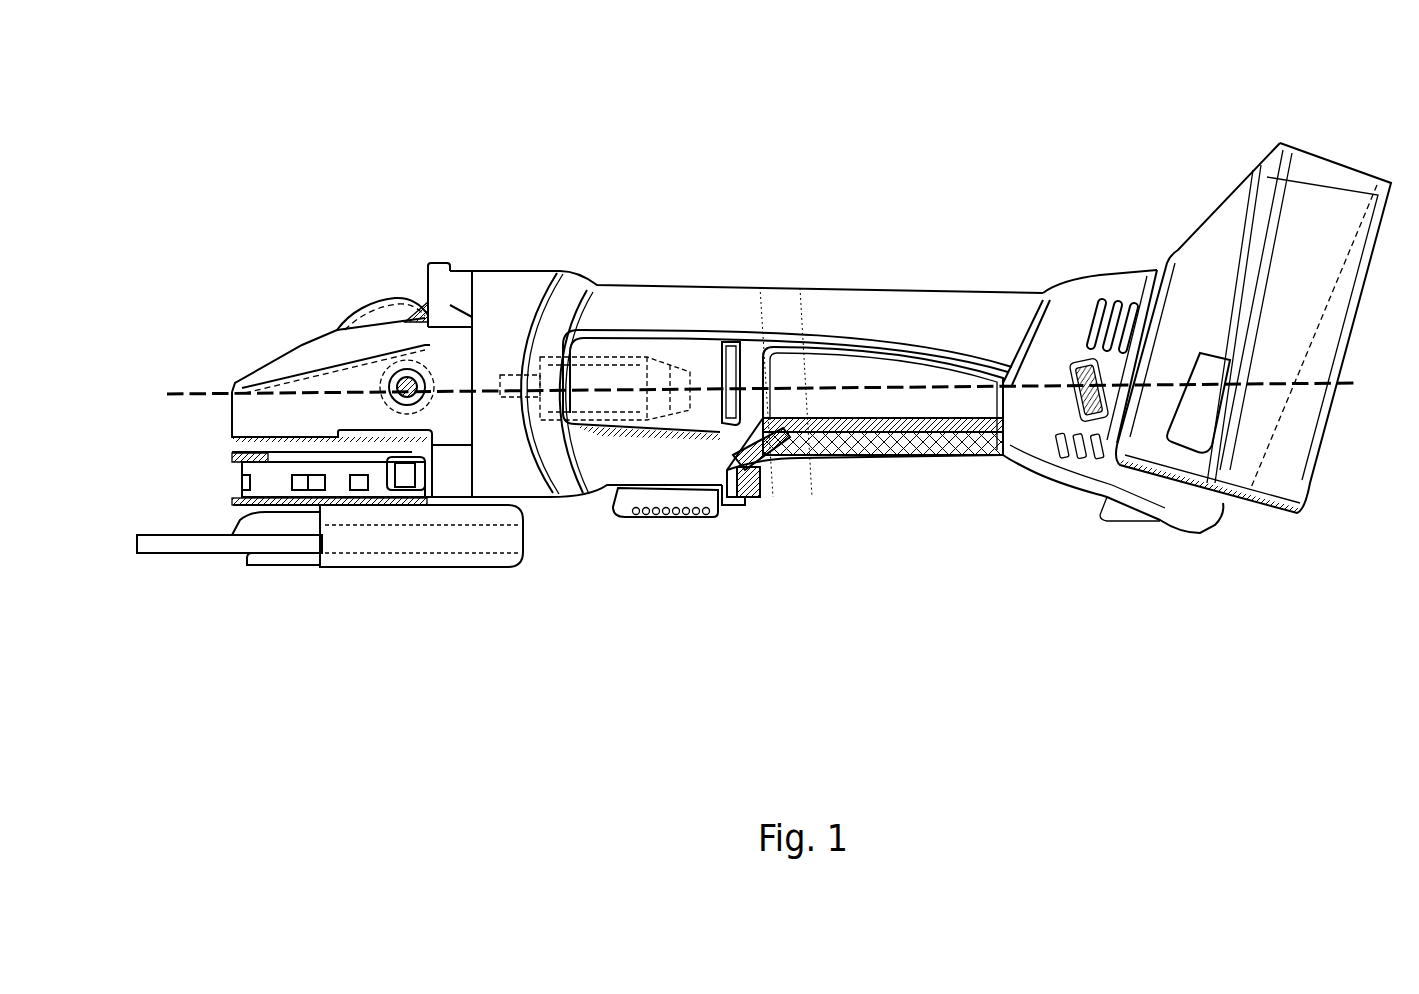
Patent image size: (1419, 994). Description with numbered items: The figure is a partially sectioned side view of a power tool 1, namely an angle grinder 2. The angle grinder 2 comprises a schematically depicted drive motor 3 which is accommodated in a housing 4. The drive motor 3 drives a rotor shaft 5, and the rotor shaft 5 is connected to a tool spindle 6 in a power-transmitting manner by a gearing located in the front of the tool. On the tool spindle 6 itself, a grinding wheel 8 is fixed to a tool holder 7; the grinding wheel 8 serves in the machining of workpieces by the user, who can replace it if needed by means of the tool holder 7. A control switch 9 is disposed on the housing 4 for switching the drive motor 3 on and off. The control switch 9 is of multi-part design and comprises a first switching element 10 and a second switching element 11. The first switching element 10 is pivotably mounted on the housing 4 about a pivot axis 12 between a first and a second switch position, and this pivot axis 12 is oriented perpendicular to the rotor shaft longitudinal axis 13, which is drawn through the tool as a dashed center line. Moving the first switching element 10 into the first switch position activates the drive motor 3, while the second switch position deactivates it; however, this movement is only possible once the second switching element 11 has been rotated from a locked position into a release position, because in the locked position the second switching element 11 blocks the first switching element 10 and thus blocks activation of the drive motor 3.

The power tool 1 is at (641, 291).
The angle grinder 2 is at (841, 229).
The drive motor 3 is at (642, 408).
The housing 4 is at (625, 300).
The rotor shaft 5 is at (510, 378).
The tool spindle 6 is at (303, 501).
The tool holder 7 is at (323, 568).
The grinding wheel 8 is at (227, 547).
The control switch 9 is at (876, 475).
The first switching element 10 is at (630, 500).
The second switching element 11 is at (753, 497).
The pivot axis 12 is at (1010, 450).
The rotor shaft longitudinal axis 13 is at (1352, 384).